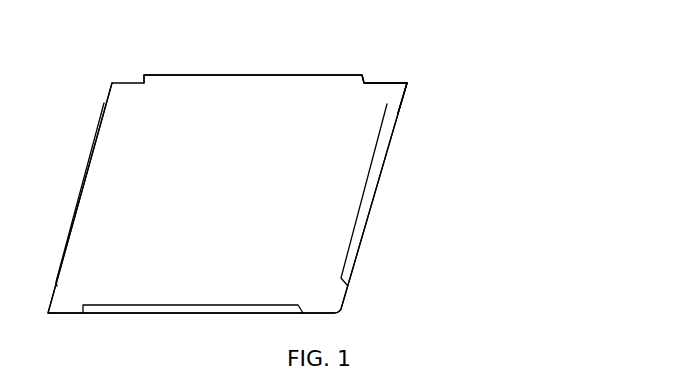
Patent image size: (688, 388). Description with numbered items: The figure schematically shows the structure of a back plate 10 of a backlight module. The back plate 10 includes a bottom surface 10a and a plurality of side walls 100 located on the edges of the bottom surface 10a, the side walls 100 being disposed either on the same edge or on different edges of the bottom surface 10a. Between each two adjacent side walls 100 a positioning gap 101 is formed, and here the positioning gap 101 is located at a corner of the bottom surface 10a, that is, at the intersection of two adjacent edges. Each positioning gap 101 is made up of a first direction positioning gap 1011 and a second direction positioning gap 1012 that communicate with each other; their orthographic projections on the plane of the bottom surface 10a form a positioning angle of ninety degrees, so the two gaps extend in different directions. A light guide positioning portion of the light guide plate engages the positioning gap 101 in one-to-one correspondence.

The back plate 10 is at (545, 75).
The side wall 100 is at (360, 234).
The bottom surface 10a is at (345, 196).
The positioning gap 101 is at (489, 45).
The first direction positioning gap 1011 is at (365, 80).
The second direction positioning gap 1012 is at (407, 86).